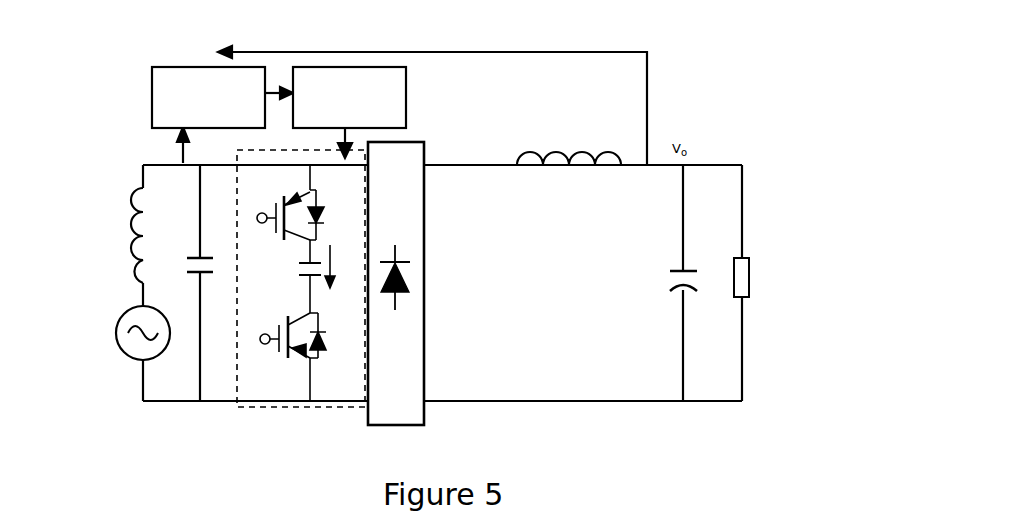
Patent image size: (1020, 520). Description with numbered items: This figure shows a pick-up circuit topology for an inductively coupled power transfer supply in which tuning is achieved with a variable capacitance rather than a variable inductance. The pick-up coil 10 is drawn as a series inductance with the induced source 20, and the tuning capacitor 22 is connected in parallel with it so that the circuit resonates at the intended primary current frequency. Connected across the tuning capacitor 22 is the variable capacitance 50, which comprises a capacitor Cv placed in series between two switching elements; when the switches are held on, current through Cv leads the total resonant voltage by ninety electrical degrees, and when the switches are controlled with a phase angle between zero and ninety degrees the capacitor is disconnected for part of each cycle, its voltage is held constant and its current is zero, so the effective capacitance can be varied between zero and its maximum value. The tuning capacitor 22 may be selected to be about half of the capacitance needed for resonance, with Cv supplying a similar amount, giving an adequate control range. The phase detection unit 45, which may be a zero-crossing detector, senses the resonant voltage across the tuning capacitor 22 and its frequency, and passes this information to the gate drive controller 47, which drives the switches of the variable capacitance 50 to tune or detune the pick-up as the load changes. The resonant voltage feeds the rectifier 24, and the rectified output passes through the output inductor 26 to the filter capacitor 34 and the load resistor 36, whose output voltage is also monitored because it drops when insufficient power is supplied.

The pick-up coil 10 is at (136, 215).
The AC voltage source Vs0 20 is at (122, 353).
The tuning capacitor 22 is at (206, 257).
The rectifier 24 is at (424, 417).
The inductor Ls1 26 is at (590, 150).
The filter capacitor Cf 34 is at (670, 272).
The load resistor R 36 is at (748, 258).
The phase detection unit 45 is at (152, 68).
The gate drive controller 47 is at (406, 100).
The variable capacitance 50 is at (287, 408).